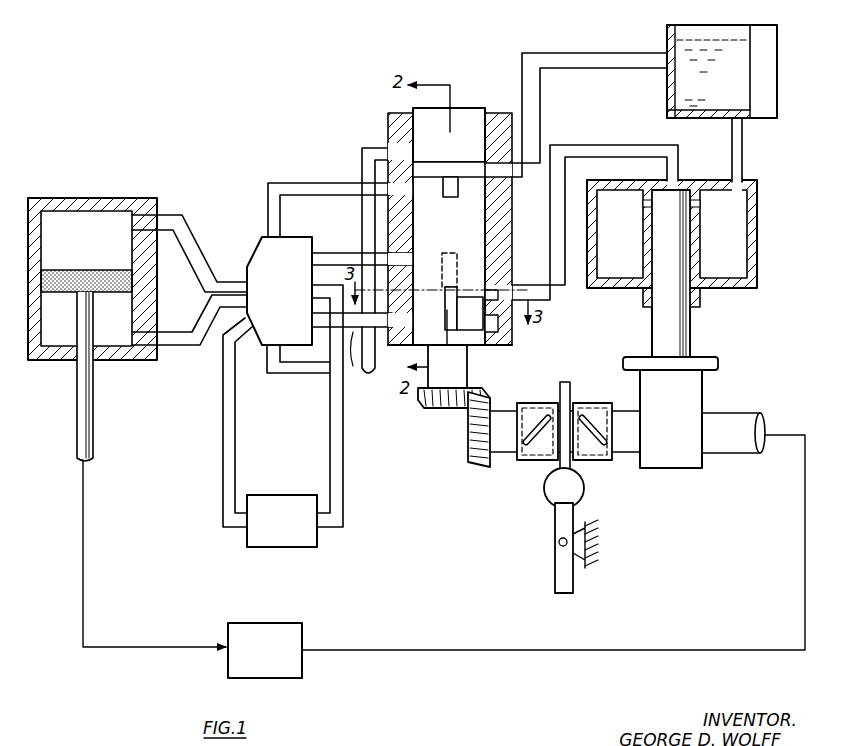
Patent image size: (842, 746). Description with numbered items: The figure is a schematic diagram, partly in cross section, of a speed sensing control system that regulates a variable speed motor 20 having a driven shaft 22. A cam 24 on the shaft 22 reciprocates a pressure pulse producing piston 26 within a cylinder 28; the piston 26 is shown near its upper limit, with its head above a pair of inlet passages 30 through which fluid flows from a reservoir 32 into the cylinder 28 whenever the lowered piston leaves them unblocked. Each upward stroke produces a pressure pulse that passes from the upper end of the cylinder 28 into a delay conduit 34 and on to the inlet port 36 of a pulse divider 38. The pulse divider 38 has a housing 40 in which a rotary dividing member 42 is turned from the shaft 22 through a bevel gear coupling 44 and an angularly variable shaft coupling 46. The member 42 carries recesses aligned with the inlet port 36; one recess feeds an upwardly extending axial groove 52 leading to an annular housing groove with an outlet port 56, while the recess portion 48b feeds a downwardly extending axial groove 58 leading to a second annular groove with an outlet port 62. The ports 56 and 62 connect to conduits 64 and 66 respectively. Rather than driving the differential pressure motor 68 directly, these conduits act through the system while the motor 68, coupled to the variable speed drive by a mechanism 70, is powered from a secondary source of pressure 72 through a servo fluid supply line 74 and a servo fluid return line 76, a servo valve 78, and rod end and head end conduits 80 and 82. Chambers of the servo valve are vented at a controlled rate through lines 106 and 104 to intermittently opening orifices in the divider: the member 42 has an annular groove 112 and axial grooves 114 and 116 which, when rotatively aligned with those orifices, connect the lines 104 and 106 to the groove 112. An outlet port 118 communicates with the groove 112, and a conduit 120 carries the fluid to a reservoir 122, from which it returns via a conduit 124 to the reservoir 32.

The variable speed motor 20 is at (308, 621).
The driven shaft 22 is at (721, 440).
The cam 24 is at (695, 389).
The pressure pulse producing piston 26 is at (672, 324).
The cylinder 28 is at (690, 246).
The inlet passages 30 is at (645, 204).
The reservoir 32 is at (757, 241).
The delay conduit 34 is at (612, 153).
The inlet port 36 is at (484, 297).
The pulse divider 38 is at (503, 346).
The housing 40 is at (500, 222).
The rotary dividing member 42 is at (474, 118).
The bevel gear coupling 44 is at (458, 415).
The angularly variable shaft coupling 46 is at (550, 463).
The recess portion 48b is at (470, 288).
The axial groove 52 is at (442, 259).
The outlet port 56 is at (402, 258).
The valve stem 58 is at (457, 350).
The outlet port 62 is at (392, 330).
The conduit 64 is at (340, 260).
The conduit 66 is at (369, 367).
The differential pressure motor 68 is at (62, 371).
The mechanism 70 is at (84, 594).
The secondary source of pressure 72 is at (272, 530).
The servo fluid supply line 74 is at (336, 450).
The servo fluid return line 76 is at (235, 450).
The servo valve 78 is at (257, 240).
The rod end conduit 80 is at (172, 340).
The head end conduit 82 is at (172, 220).
The line 104 is at (313, 190).
The line 106 is at (277, 375).
The annular groove 112 is at (455, 170).
The axial groove 114 is at (453, 186).
The axial groove 116 is at (405, 145).
The outlet port 118 is at (500, 176).
The conduit 120 is at (600, 60).
The reservoir 122 is at (740, 34).
The conduit 124 is at (742, 154).